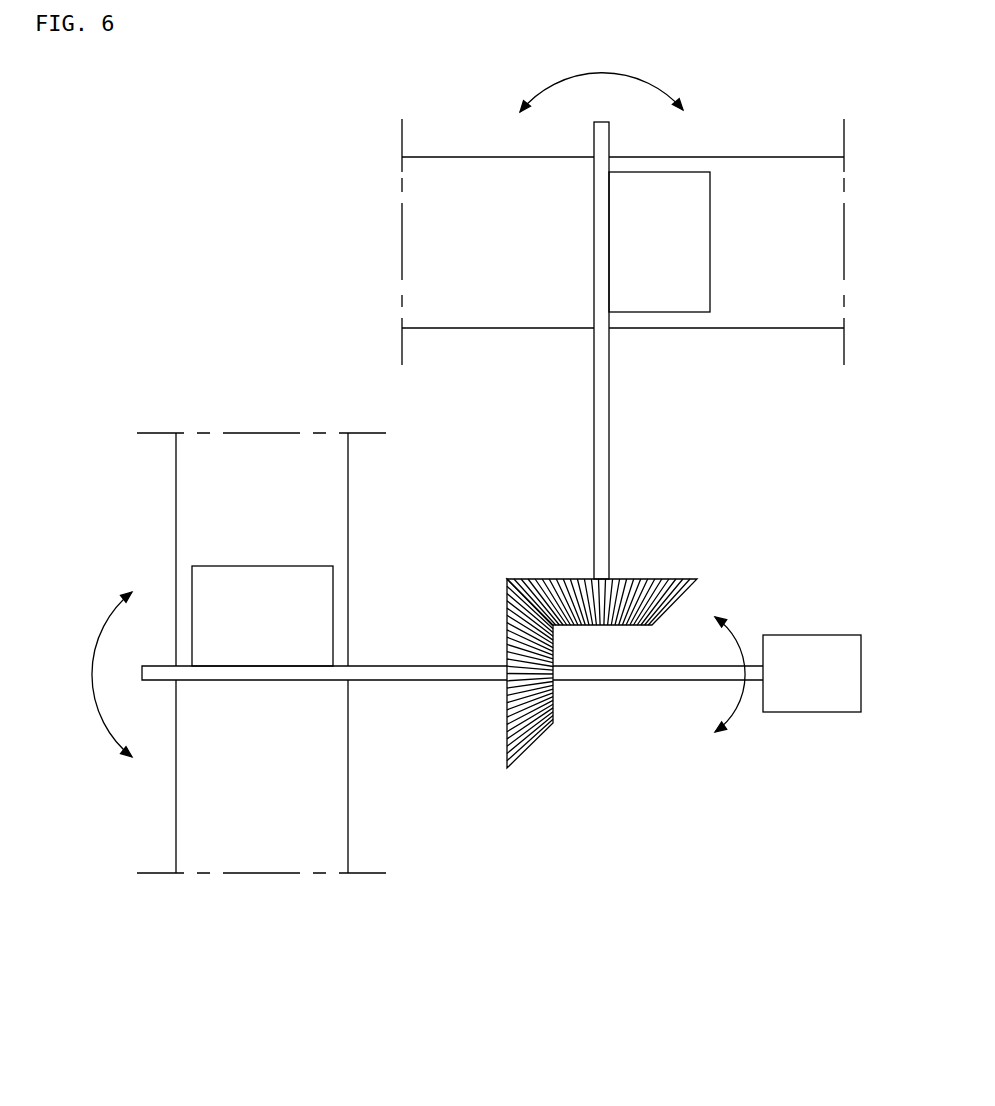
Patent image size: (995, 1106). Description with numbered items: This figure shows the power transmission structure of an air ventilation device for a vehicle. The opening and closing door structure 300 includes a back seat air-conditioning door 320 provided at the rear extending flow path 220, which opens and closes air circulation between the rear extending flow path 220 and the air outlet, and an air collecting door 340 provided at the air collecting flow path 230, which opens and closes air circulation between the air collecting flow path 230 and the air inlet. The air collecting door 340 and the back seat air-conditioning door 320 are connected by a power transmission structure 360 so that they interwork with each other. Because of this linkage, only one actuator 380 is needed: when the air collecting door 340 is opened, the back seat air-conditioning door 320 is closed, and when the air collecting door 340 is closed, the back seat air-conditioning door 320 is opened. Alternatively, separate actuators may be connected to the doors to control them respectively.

The rear extending flow path 220 is at (193, 812).
The air collecting flow path 230 is at (773, 157).
The opening and closing door structure 300 is at (532, 798).
The back seat air-conditioning door 320 is at (235, 566).
The air collecting door 340 is at (677, 300).
The power transmission structure 360 is at (618, 703).
The actuator 380 is at (812, 712).